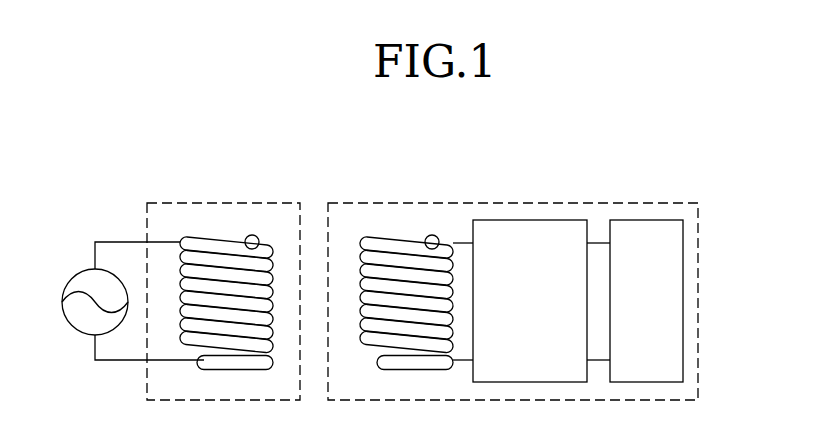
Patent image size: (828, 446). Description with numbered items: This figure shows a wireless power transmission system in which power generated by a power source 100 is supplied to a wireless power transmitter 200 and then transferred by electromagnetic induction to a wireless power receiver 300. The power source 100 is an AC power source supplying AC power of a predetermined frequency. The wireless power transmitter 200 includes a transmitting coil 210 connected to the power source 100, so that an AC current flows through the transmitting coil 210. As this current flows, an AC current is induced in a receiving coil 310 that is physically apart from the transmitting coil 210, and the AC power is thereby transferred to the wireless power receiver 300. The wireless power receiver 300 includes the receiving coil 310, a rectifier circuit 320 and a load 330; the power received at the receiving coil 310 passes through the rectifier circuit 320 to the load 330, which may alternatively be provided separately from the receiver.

The power source 100 is at (73, 273).
The wireless power transmitter 200 is at (171, 200).
The transmitting coil 210 is at (237, 250).
The wireless power receiver 300 is at (370, 200).
The receiving coil 310 is at (421, 248).
The rectifier circuit 320 is at (519, 218).
The load 330 is at (645, 218).